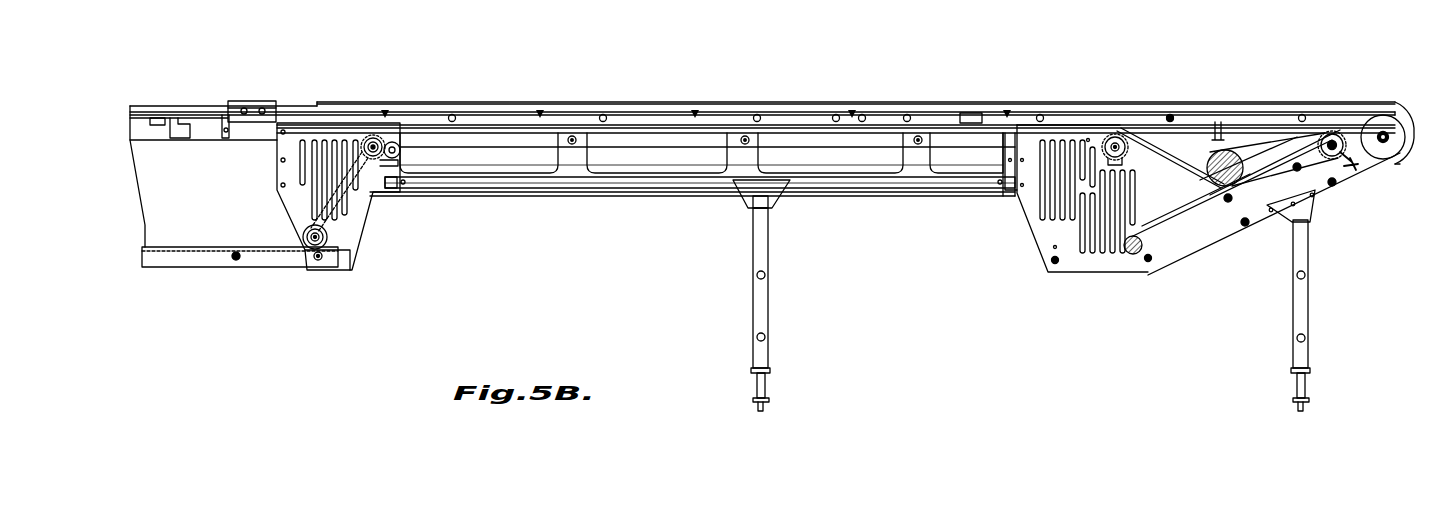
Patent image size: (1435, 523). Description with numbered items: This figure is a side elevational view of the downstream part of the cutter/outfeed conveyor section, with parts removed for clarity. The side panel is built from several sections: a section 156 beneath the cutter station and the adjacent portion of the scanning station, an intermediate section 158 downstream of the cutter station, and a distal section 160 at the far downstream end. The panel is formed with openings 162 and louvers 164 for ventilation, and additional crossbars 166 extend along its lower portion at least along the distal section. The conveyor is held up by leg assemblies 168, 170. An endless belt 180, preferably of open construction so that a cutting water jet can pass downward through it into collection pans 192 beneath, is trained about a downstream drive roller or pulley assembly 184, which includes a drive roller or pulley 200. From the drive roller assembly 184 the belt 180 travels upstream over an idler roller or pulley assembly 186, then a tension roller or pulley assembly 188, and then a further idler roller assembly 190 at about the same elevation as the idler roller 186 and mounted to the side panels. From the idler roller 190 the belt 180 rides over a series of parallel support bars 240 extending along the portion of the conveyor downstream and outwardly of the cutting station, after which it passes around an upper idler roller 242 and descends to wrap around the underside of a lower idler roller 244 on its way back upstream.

The side panel section 156 is at (353, 253).
The intermediate section 158 is at (597, 193).
The distal section 160 is at (1113, 273).
The openings 162 is at (652, 163).
The louvers 164 is at (1078, 250).
The crossbars 166 is at (1052, 260).
The leg assembly 168 is at (1315, 395).
The leg assembly 170 is at (773, 400).
The endless belt 180 is at (1160, 140).
The drive roller or pulley assembly 184 is at (1410, 155).
The idler roller or pulley assembly 186 is at (1327, 140).
The tension roller or pulley assembly 188 is at (1224, 152).
The idler roller assembly 190 is at (1108, 136).
The collection pans 192 is at (150, 106).
The drive roller or pulley 200 is at (1384, 156).
The support bars 240 is at (846, 143).
The upper idler roller 242 is at (367, 140).
The lower idler roller 244 is at (326, 228).